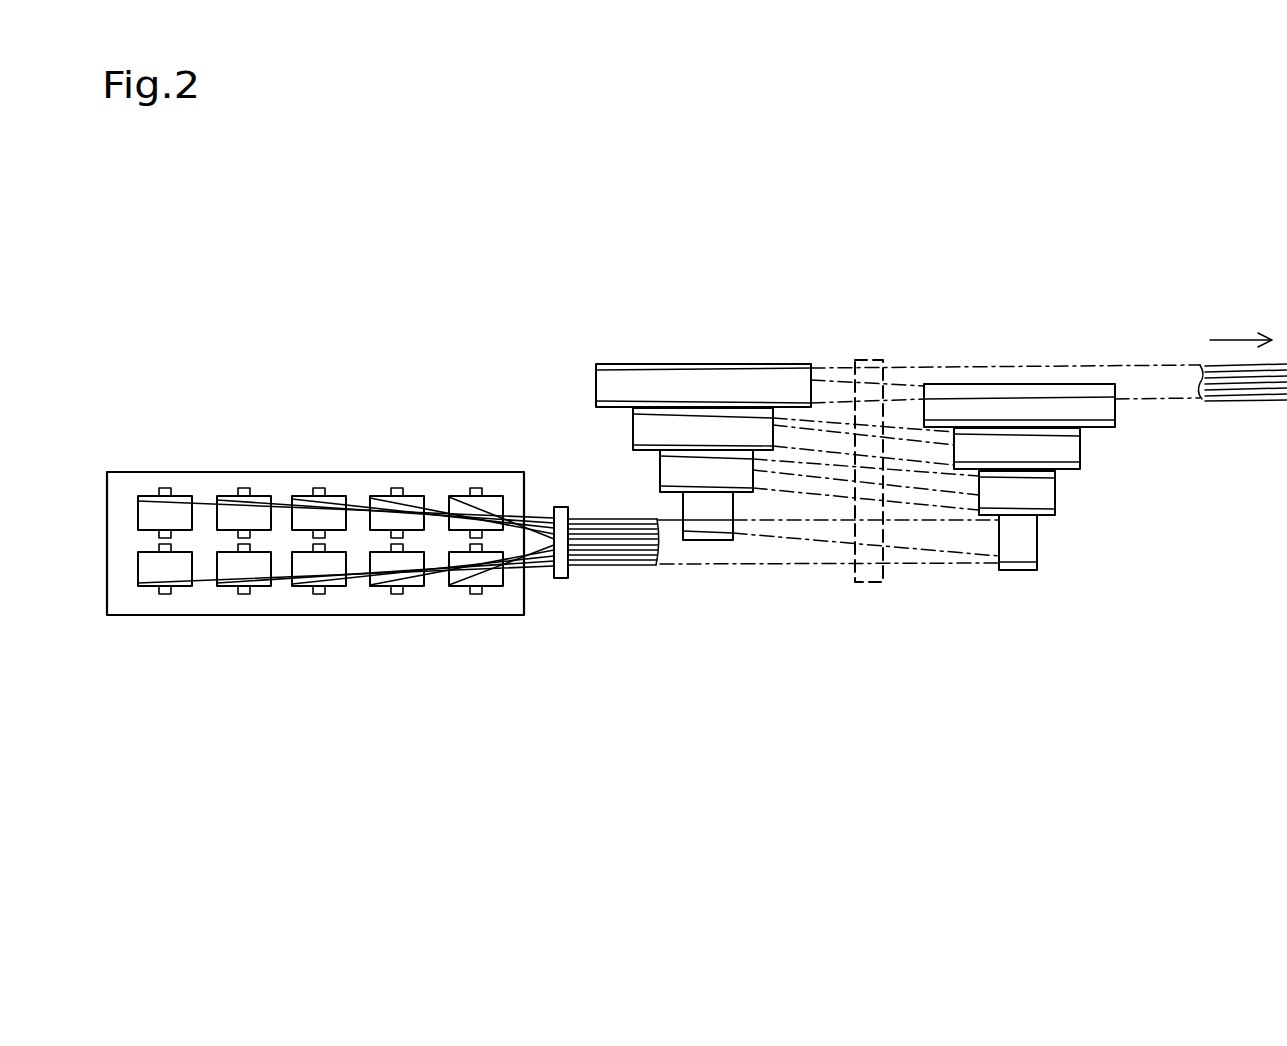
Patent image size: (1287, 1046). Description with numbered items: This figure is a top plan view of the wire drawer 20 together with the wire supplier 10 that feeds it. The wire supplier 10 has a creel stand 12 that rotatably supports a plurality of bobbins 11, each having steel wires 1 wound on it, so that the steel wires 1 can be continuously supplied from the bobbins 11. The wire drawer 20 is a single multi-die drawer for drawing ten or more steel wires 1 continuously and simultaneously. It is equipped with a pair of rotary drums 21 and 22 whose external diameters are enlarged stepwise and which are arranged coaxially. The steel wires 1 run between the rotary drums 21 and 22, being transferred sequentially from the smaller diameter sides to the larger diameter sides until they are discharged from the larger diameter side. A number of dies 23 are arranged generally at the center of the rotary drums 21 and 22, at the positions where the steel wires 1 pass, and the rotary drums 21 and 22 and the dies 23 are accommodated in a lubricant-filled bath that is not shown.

The steel wire 1 is at (616, 566).
The wire supplier 10 is at (330, 608).
The bobbin 11 is at (335, 590).
The creel stand 12 is at (470, 605).
The wire drawer 20 is at (875, 476).
The rotary drum 21 is at (632, 378).
The rotary drum 22 is at (1026, 550).
The die 23 is at (860, 586).